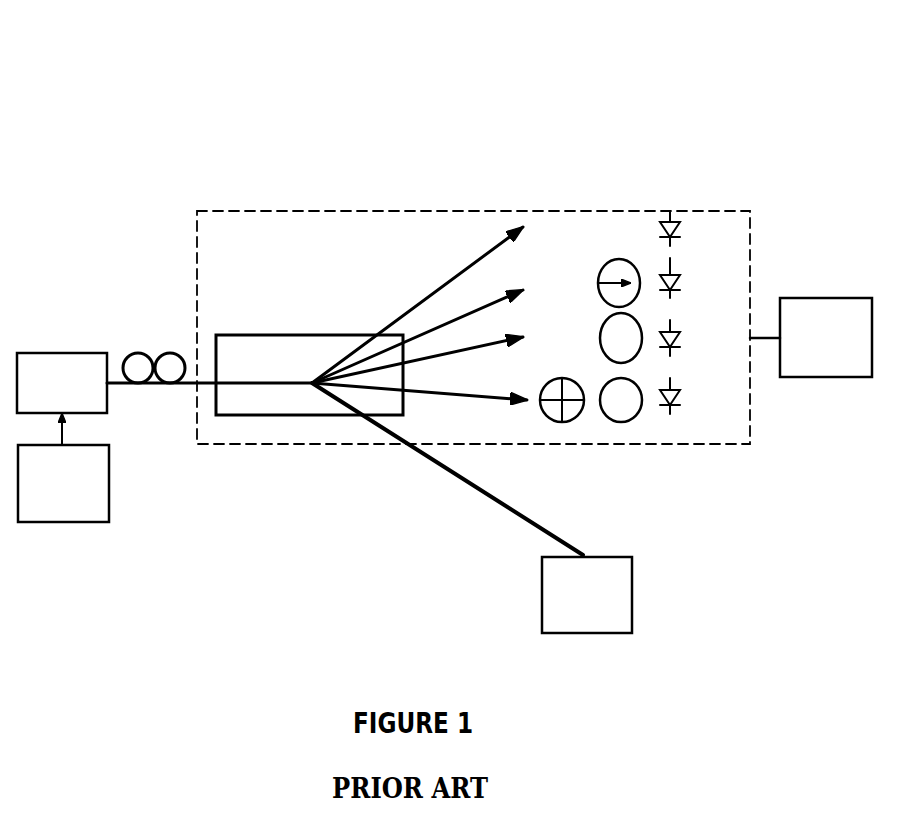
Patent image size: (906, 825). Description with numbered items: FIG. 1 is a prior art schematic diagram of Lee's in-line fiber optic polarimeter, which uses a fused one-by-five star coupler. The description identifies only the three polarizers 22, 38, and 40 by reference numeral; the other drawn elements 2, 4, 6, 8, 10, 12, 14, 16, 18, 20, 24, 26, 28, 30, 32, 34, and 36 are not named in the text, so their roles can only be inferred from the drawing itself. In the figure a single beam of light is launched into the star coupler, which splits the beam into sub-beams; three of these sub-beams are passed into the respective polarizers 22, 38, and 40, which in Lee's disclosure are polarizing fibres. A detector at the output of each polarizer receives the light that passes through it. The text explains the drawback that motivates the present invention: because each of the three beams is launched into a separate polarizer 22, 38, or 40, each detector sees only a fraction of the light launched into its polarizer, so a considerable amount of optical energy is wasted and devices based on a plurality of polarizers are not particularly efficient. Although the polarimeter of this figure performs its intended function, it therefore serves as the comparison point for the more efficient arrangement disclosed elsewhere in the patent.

The current source 2 is at (63, 468).
The laser diode 4 is at (62, 383).
The lens 6 is at (131, 355).
The lens 8 is at (167, 353).
The optical head 10 is at (338, 448).
The optical element / hologram 12 is at (248, 357).
The diffracted beam 14 is at (393, 318).
The diffracted beam 16 is at (417, 330).
The diffracted beam 18 is at (481, 323).
The diffracted beam 20 is at (470, 397).
The polarizer 22 is at (553, 390).
The current source 24 is at (620, 272).
The photodiode I0 26 is at (673, 217).
The photodiode I1 28 is at (677, 278).
The photodiode I2 30 is at (677, 342).
The photodiode I3 32 is at (678, 407).
The processing circuit 34 is at (811, 337).
The detector 36 is at (587, 595).
The polarizer 38 is at (614, 328).
The polarizer 40 is at (635, 390).